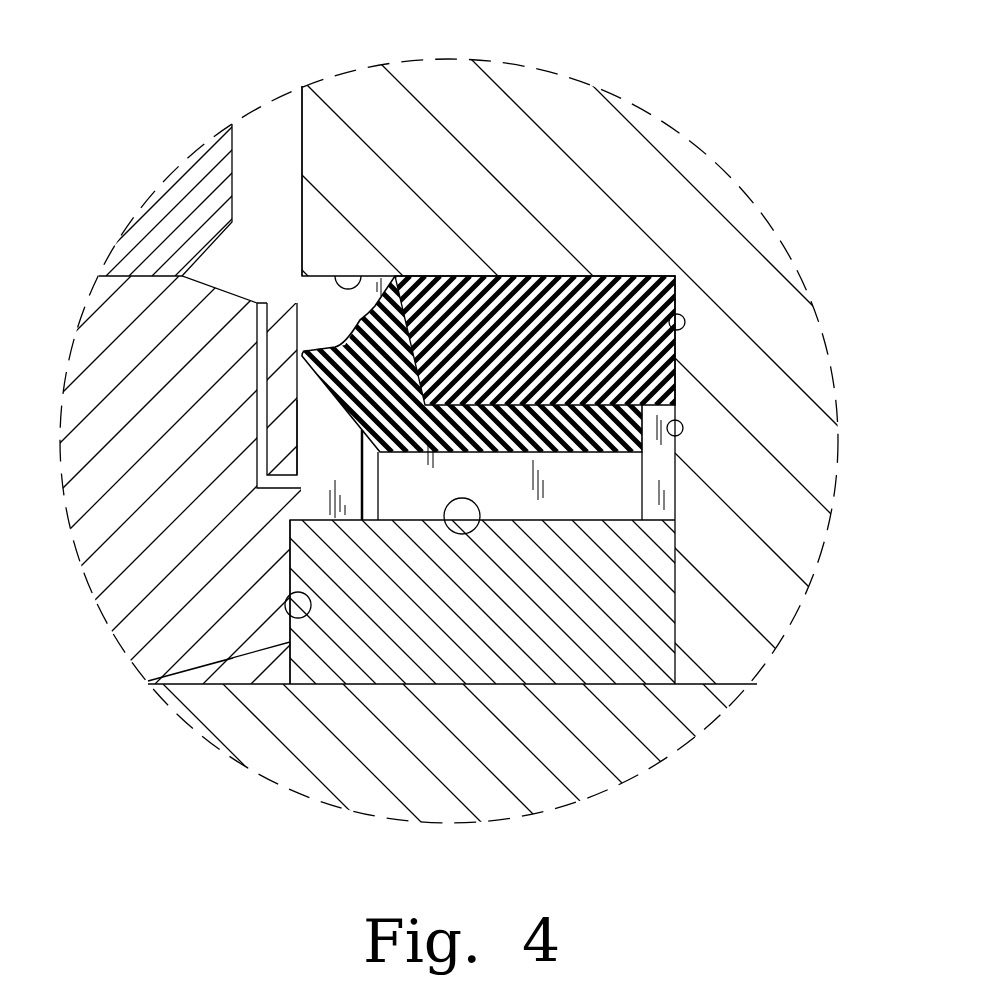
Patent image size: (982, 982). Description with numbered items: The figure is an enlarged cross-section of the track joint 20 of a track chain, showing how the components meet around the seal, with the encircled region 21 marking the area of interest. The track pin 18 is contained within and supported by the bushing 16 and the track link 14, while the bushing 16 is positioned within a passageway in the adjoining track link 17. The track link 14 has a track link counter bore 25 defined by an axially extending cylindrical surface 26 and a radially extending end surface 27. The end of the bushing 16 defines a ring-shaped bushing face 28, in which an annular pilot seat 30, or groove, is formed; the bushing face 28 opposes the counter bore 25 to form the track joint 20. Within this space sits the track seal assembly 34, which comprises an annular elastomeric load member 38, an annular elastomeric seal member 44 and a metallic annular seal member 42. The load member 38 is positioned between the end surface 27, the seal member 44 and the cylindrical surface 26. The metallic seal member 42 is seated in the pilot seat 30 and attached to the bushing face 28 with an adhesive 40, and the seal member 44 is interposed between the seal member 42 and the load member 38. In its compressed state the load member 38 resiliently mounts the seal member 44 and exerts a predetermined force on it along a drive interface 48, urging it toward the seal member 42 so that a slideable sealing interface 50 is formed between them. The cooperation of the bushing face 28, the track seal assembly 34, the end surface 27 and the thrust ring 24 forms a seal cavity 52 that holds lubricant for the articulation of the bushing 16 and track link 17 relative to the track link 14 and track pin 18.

The track link 14 is at (745, 215).
The bushing 16 is at (102, 297).
The track link 17 is at (195, 168).
The track pin 18 is at (568, 800).
The track joint 20 is at (702, 502).
The sealing region 21 is at (260, 98).
The thrust ring 24 is at (657, 602).
The track link counter bore 25 is at (682, 428).
The axially extending cylindrical surface 26 is at (362, 272).
The radially extending end surface 27 is at (684, 320).
The bushing face 28 is at (286, 605).
The pilot seat 30 is at (238, 386).
The track seal assembly 34 is at (386, 200).
The annular elastomeric load member 38 is at (513, 275).
The adhesive 40 is at (263, 412).
The metallic annular seal member 42 is at (298, 422).
The annular elastomeric seal member 44 is at (578, 437).
The drive interface 48 is at (525, 404).
The slideable sealing interface 50 is at (296, 382).
The seal cavity 52 is at (476, 527).